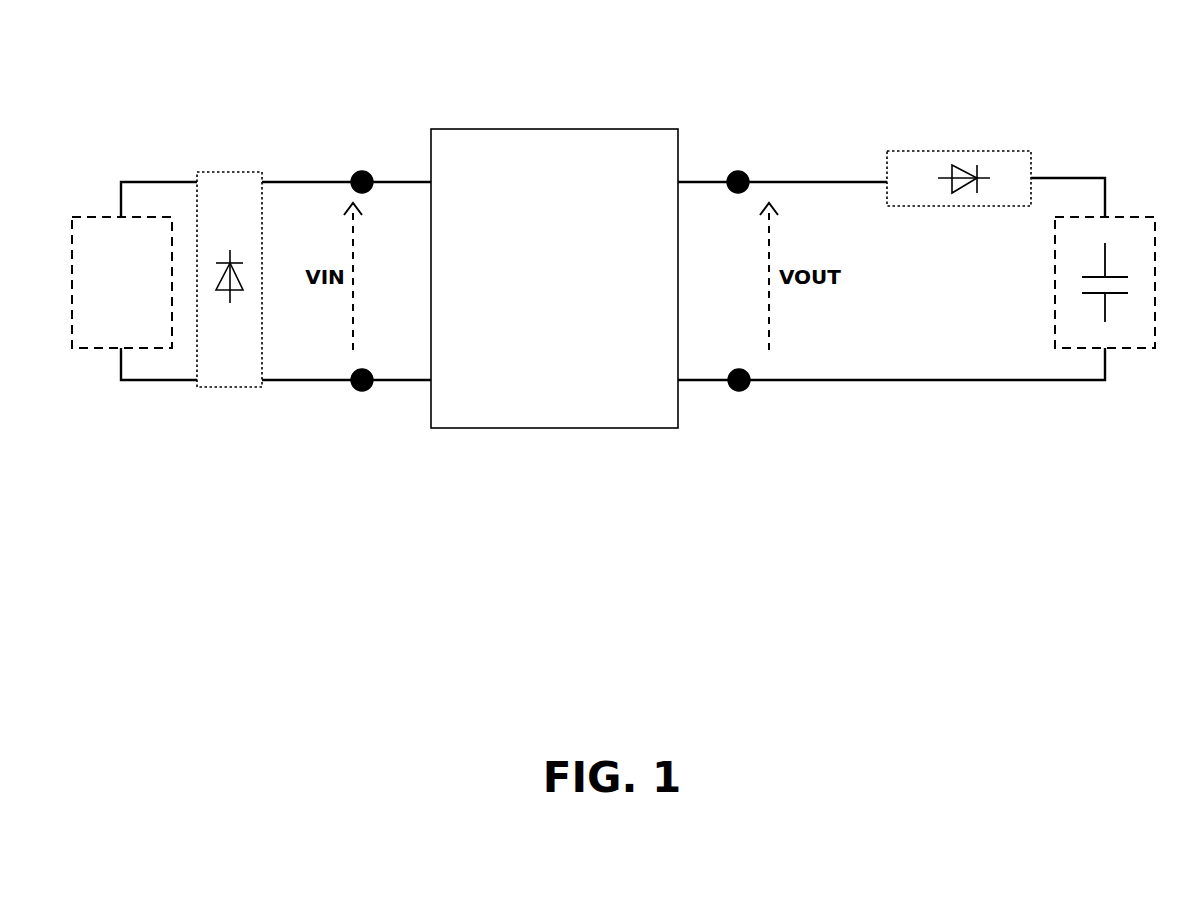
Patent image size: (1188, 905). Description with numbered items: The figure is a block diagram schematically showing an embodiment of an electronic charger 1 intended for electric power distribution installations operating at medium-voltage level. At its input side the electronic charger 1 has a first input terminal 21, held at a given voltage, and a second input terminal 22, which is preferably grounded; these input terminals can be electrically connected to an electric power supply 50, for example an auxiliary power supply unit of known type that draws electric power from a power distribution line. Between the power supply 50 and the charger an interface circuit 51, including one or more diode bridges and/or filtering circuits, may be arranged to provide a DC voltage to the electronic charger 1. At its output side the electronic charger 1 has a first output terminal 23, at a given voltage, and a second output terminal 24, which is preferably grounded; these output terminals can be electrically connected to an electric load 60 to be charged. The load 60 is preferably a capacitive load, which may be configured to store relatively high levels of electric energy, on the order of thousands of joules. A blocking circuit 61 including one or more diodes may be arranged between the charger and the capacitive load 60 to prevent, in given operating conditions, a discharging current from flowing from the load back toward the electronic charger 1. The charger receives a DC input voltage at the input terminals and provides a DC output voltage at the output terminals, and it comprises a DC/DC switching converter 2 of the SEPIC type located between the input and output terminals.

The electronic charger 1 is at (695, 612).
The DC/DC switching converter 2 is at (560, 438).
The first input terminal 21 is at (372, 157).
The second input terminal 22 is at (379, 402).
The first output terminal 23 is at (742, 157).
The second output terminal 24 is at (741, 400).
The electric power supply 50 is at (92, 350).
The interface circuit 51 is at (222, 390).
The electric load 60 is at (1119, 362).
The blocking circuit 61 is at (964, 218).